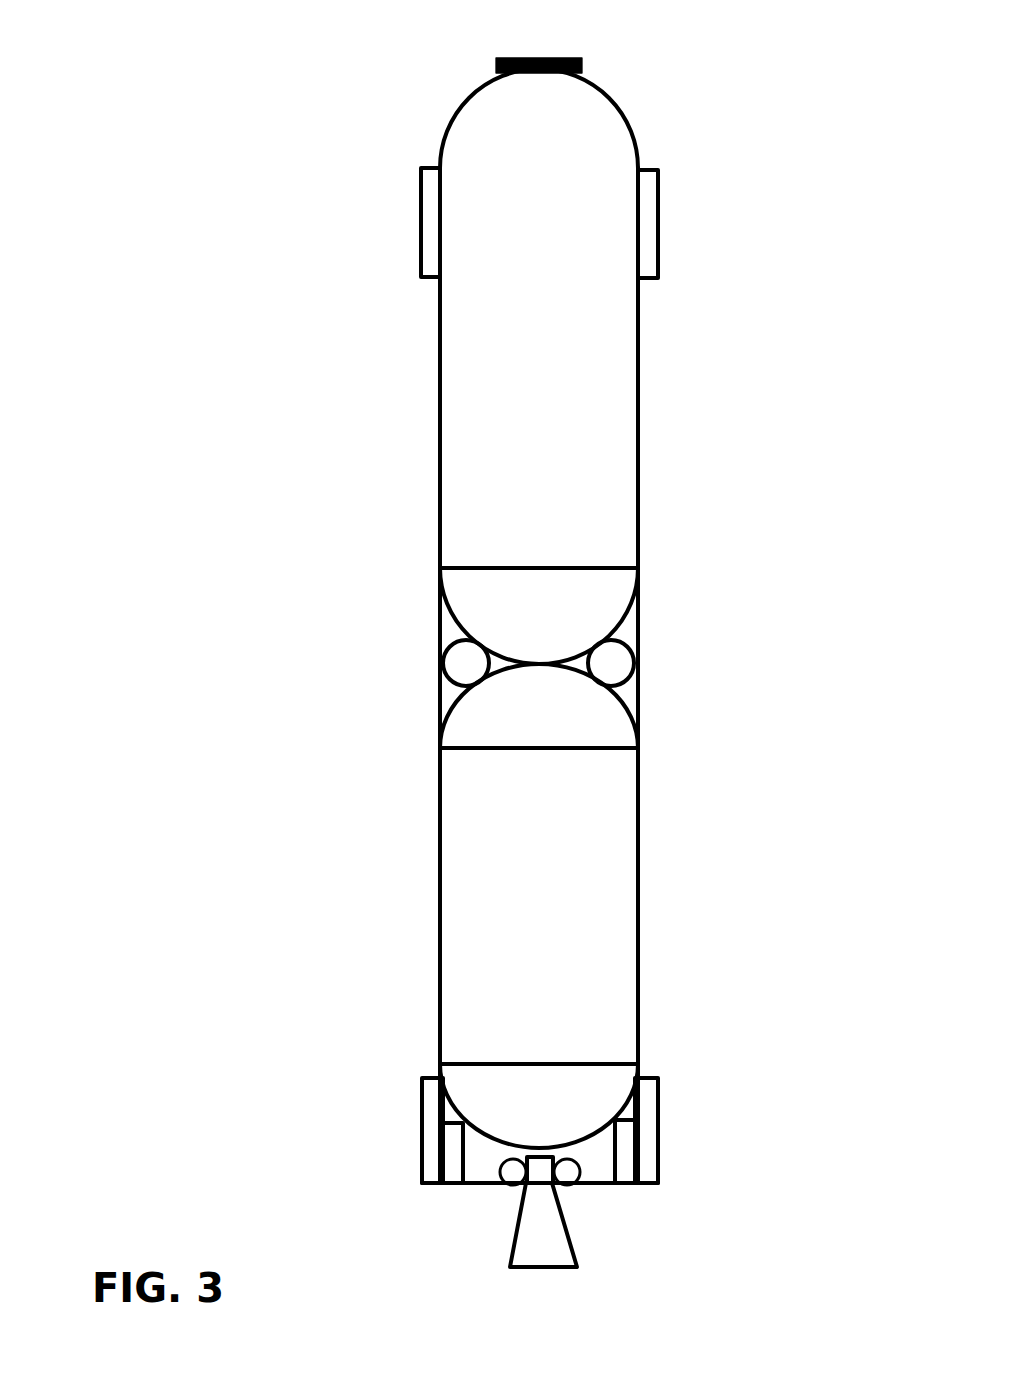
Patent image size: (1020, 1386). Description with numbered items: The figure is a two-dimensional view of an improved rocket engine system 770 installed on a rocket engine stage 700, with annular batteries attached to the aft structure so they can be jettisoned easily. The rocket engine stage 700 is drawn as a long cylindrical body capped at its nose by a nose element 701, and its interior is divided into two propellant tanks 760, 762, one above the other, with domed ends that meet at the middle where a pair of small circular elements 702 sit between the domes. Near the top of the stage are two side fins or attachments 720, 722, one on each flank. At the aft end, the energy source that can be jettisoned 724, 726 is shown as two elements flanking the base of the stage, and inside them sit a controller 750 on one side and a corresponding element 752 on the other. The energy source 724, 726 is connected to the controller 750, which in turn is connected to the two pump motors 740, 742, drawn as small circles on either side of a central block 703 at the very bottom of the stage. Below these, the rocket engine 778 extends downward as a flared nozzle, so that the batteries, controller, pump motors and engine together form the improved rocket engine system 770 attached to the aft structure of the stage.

The rocket engine stage 700 is at (260, 55).
The nose cap 701 is at (545, 56).
The tank interconnect spheres 702 is at (452, 663).
The engine mount block 703 is at (603, 1187).
The upper left fin 720 is at (420, 199).
The upper right fin 722 is at (658, 220).
The jettisonable energy source 724 is at (430, 1095).
The jettisonable energy source 726 is at (648, 1082).
The pump motor 740 is at (510, 1170).
The pump motor 742 is at (578, 1187).
The controller 750 is at (450, 1178).
The right landing leg 752 is at (627, 1175).
The propellant tank 760 is at (632, 370).
The propellant tank 762 is at (624, 952).
The improved rocket engine system 770 is at (468, 1263).
The rocket engine 778 is at (577, 1265).